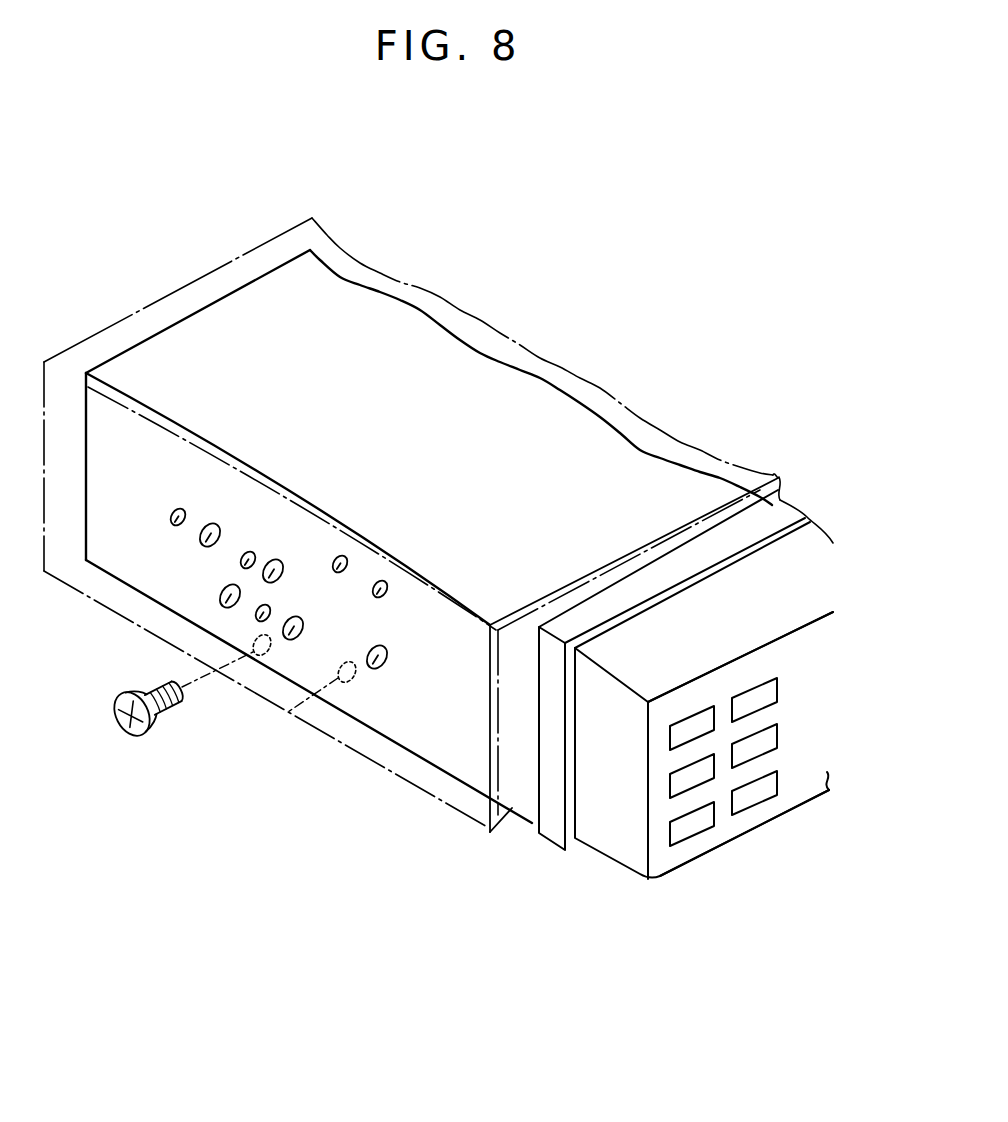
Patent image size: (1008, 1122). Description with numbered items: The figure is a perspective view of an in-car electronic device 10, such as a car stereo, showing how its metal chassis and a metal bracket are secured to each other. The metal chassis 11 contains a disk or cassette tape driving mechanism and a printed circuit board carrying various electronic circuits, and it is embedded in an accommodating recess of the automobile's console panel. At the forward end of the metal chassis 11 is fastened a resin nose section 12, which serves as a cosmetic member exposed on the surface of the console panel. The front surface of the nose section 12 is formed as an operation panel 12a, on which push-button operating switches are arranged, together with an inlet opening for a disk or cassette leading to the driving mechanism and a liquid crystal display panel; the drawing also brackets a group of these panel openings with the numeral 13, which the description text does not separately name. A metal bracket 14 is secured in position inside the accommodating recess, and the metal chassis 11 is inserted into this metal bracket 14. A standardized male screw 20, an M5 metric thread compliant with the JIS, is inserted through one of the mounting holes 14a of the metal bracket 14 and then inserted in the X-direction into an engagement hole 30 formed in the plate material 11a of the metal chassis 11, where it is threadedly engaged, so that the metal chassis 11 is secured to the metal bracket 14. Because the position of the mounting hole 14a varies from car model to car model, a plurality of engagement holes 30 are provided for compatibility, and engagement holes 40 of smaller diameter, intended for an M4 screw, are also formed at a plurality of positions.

The in-car electronic device 10 is at (501, 318).
The metal chassis 11 is at (200, 338).
The plate material 11a is at (433, 745).
The nose section 12 is at (603, 862).
The operation panel 12a is at (723, 838).
The windows 13 is at (778, 663).
The metal bracket 14 is at (330, 742).
The mounting hole 14a is at (342, 675).
The male screw 20 is at (168, 710).
The engagement hole 30 is at (218, 526).
The engagement hole of smaller diameter 40 is at (270, 609).